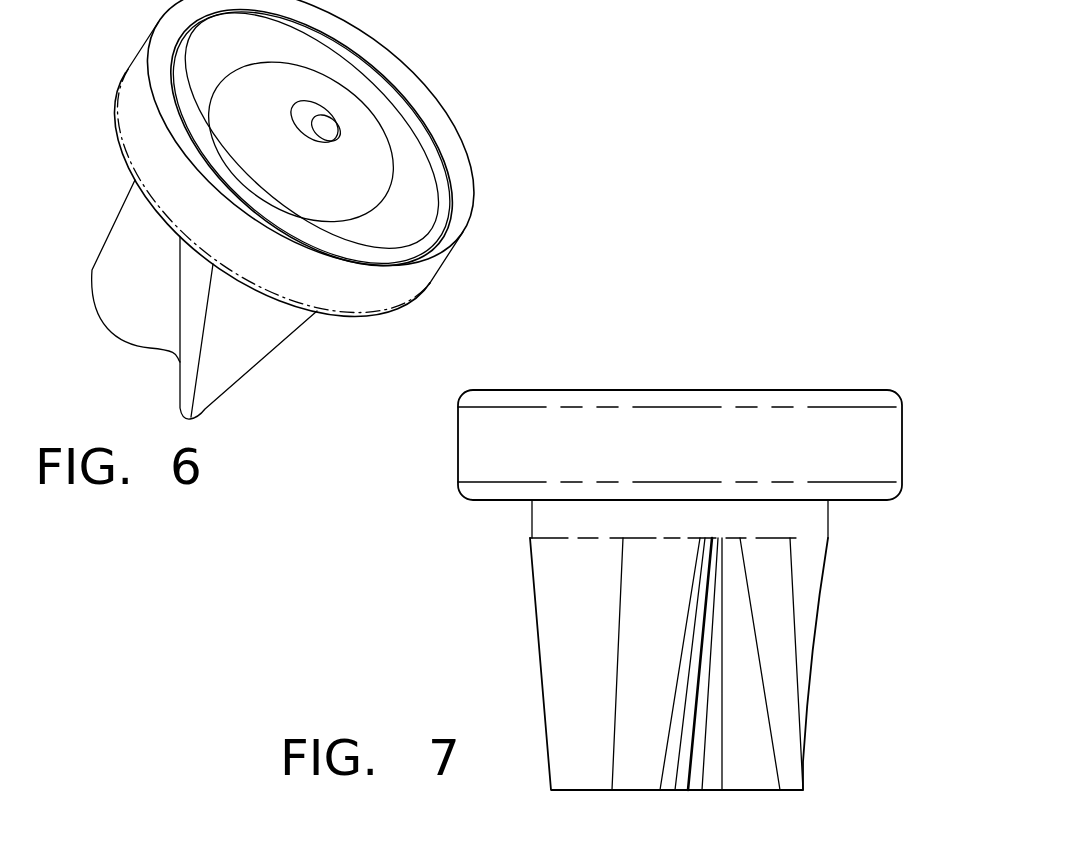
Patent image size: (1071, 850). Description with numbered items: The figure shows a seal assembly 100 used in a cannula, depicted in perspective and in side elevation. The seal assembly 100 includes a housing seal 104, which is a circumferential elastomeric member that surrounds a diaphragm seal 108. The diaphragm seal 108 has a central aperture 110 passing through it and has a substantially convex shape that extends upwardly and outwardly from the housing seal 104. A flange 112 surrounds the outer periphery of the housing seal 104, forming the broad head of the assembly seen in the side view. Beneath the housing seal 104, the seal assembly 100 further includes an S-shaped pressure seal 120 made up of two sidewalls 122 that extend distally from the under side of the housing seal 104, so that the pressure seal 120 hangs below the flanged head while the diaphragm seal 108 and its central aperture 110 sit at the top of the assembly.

In FIG. 6, the seal assembly 100 is at (316, 209).
In FIG. 6, the housing seal 104 is at (412, 180).
In FIG. 6, the diaphragm seal 108 is at (277, 90).
In FIG. 6, the central aperture 110 is at (323, 113).
In FIG. 6, the flange 112 is at (133, 90).
In FIG. 7, the flange 112 is at (687, 427).
In FIG. 6, the S-shaped pressure seal 120 is at (198, 291).
In FIG. 7, the S-shaped pressure seal 120 is at (552, 604).
In FIG. 6, the sidewalls 122 is at (258, 347).
In FIG. 7, the sidewalls 122 is at (800, 652).